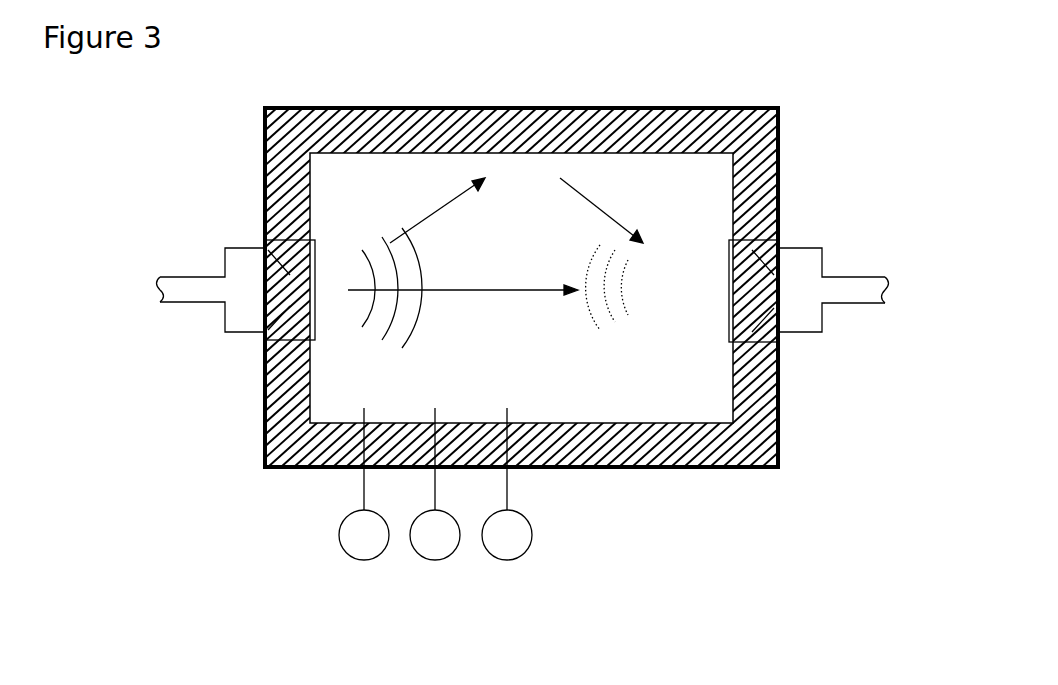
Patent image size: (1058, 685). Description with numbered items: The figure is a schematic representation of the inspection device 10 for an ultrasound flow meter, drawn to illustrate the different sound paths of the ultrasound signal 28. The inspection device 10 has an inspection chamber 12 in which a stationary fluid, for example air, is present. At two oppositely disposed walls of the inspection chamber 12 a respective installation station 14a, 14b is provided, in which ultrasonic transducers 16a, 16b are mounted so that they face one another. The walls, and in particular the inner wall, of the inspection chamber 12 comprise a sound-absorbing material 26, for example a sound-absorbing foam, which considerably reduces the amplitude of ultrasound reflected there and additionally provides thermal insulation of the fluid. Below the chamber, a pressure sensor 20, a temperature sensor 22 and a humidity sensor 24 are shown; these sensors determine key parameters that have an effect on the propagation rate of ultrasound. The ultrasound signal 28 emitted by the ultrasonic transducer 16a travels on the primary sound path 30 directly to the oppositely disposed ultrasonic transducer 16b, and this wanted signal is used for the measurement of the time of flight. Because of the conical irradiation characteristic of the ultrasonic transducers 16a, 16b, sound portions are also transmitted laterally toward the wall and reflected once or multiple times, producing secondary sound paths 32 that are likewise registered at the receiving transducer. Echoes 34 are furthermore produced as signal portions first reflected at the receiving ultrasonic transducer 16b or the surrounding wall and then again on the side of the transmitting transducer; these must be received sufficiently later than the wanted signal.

The inspection device 10 is at (529, 322).
The inspection chamber 12 is at (529, 322).
The installation station 14a is at (265, 250).
The installation station 14b is at (780, 248).
The ultrasonic transducer 16a is at (235, 317).
The ultrasonic transducer 16b is at (807, 312).
The pressure sensor 20 is at (340, 535).
The temperature sensor 22 is at (436, 550).
The humidity sensor 24 is at (527, 543).
The sound-absorbing material 26 is at (762, 443).
The ultrasound signal 28 is at (403, 330).
The primary sound path 30 is at (483, 292).
The secondary sound paths 32 is at (575, 207).
The echoes 34 is at (600, 303).